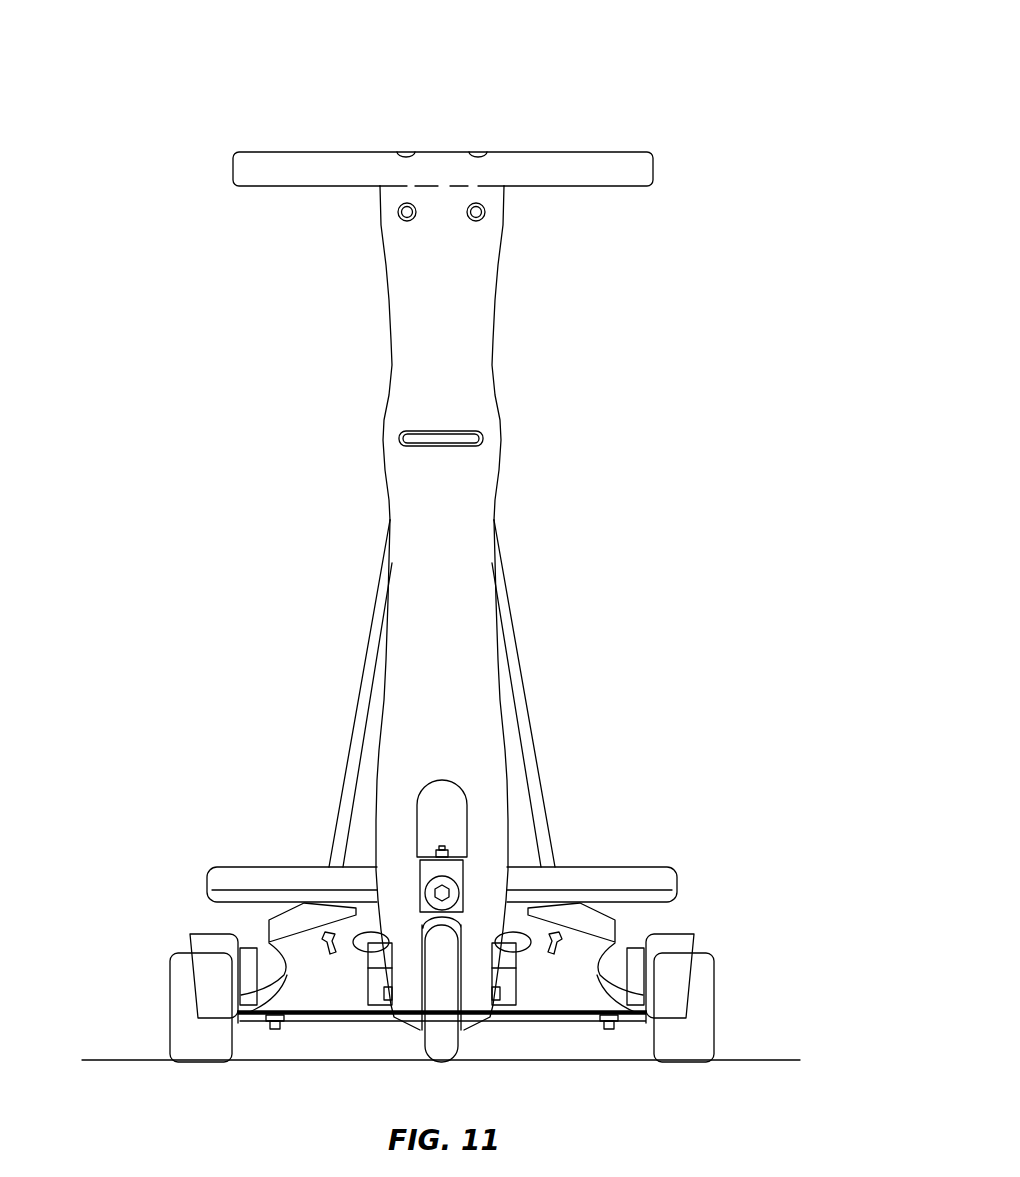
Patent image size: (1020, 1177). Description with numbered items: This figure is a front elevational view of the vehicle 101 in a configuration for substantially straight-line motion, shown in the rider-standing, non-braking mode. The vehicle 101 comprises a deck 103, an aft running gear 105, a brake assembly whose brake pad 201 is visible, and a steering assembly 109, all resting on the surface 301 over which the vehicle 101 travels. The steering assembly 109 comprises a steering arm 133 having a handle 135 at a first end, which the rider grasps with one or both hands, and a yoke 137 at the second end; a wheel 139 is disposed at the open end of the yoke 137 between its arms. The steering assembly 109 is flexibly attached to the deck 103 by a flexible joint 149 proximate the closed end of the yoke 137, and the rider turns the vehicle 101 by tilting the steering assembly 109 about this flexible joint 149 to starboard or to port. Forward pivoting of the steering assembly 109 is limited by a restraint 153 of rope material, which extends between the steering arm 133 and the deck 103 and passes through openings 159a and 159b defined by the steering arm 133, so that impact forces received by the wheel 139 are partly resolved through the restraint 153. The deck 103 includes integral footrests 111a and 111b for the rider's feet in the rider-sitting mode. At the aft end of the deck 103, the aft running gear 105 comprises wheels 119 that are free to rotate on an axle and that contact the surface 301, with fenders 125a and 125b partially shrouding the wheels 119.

The vehicle 101 is at (634, 88).
The handle 135 is at (636, 172).
The steering arm 133 is at (415, 303).
The steering assembly 109 is at (495, 326).
The opening 159a is at (481, 434).
The opening 159b is at (402, 433).
The restraint 153 is at (353, 724).
The flexible joint 149 is at (468, 860).
The footrest 111a is at (662, 873).
The footrest 111b is at (220, 880).
The deck 103 is at (605, 928).
The brake pad 201 is at (512, 972).
The yoke 137 is at (408, 988).
The wheel 139 is at (443, 1033).
The aft running gear 105 is at (170, 1008).
The fender 125a is at (680, 948).
The fender 125b is at (202, 934).
The wheels 119 is at (192, 1040).
The surface 301 is at (763, 1058).